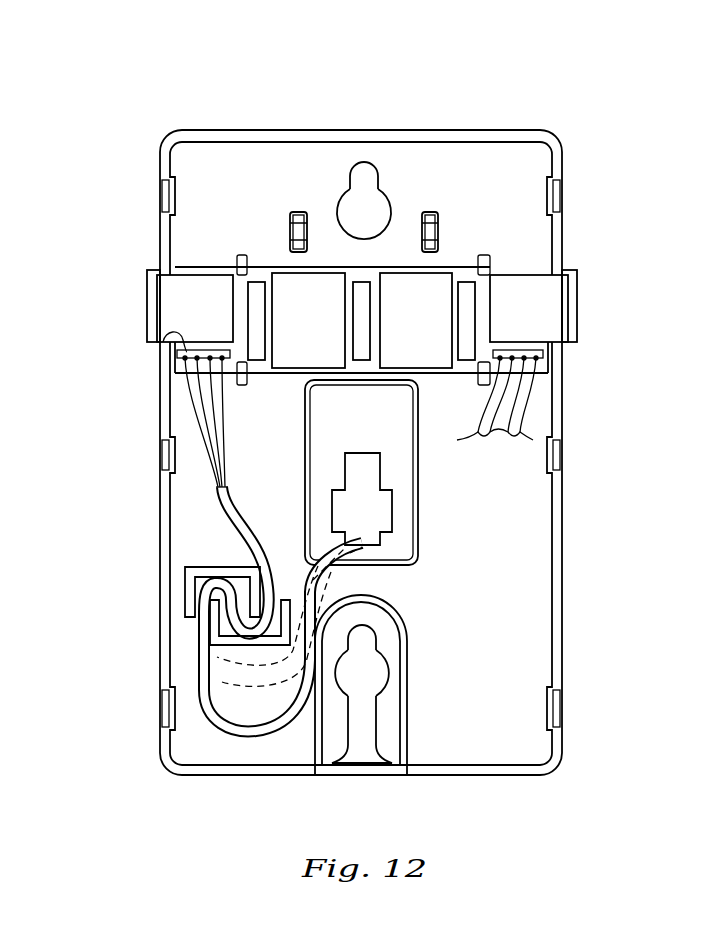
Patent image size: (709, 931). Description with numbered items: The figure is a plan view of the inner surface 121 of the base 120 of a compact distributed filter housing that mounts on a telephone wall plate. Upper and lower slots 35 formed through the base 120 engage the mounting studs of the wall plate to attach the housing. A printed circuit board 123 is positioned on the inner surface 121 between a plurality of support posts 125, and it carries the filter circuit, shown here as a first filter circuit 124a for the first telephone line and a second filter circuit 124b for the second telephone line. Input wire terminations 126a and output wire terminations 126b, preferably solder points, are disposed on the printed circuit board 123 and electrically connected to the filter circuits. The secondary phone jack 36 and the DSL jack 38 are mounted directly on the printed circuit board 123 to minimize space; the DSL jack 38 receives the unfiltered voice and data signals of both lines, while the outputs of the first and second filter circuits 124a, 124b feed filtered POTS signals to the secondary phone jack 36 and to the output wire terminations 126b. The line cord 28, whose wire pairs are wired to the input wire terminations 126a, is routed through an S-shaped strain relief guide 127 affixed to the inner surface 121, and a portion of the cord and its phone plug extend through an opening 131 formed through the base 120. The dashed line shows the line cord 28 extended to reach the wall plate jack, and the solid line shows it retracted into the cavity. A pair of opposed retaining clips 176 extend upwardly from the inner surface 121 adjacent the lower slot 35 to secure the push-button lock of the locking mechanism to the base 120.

The line cord 28 is at (217, 508).
The slots 35 is at (359, 220).
The secondary phone jack 36 is at (543, 302).
The DSL jack 38 is at (170, 316).
The base 120 is at (497, 776).
The inner surface 121 is at (497, 592).
The printed circuit board 123 is at (376, 280).
The first filter circuit 124a is at (290, 305).
The second filter circuit 124b is at (441, 283).
The support posts 125 is at (238, 256).
The input wire terminations 126a is at (153, 342).
The output wire terminations 126b is at (528, 358).
The strain relief guide 127 is at (186, 597).
The opening 131 is at (368, 490).
The retaining clips 176 is at (296, 208).